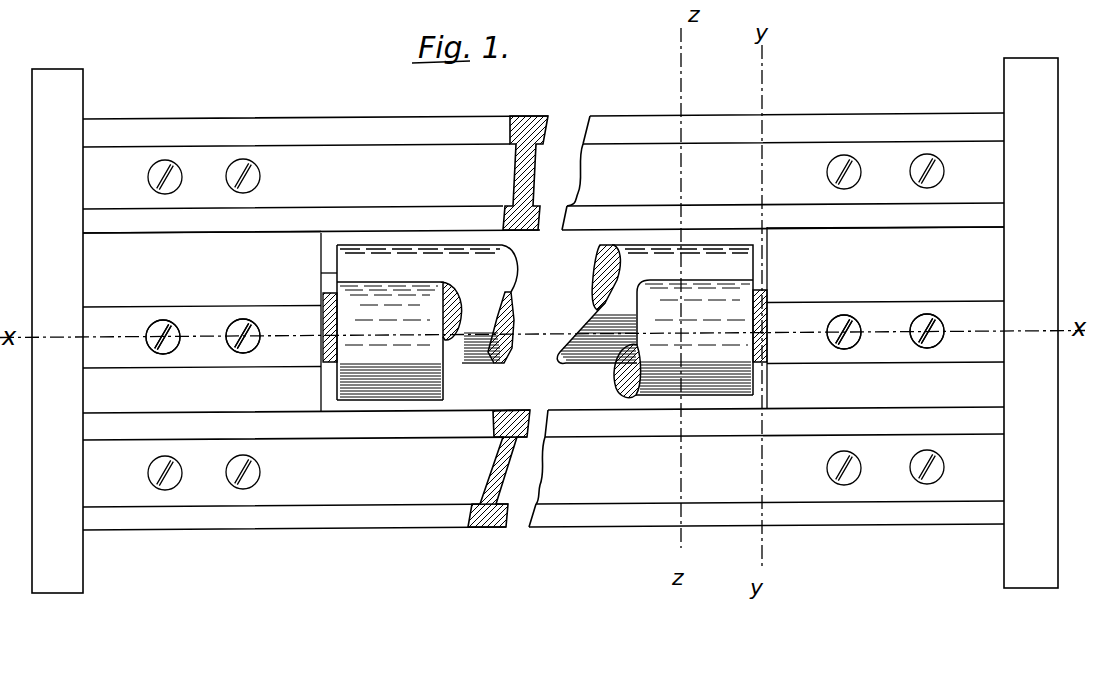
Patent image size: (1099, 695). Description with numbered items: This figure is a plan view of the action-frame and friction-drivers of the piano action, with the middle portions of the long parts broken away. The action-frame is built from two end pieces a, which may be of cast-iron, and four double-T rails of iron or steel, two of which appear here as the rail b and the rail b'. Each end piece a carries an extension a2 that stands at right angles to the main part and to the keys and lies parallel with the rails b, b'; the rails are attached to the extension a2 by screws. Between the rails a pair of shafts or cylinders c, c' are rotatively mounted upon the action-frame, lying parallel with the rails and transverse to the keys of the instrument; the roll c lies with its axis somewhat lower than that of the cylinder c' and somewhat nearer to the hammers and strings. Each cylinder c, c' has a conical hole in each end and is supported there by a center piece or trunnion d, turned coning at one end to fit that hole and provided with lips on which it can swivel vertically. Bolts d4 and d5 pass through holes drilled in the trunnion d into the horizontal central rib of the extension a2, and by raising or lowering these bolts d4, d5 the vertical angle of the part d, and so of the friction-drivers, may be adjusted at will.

The end piece a is at (545, 325).
The extension a2 is at (543, 257).
The double-T rail b is at (543, 321).
The double-T rail b' is at (315, 174).
The shaft or cylinder c is at (545, 322).
The shaft or cylinder c' is at (545, 340).
The center piece or trunnion d is at (560, 336).
The bolt d4 is at (838, 330).
The bolt d5 is at (920, 326).